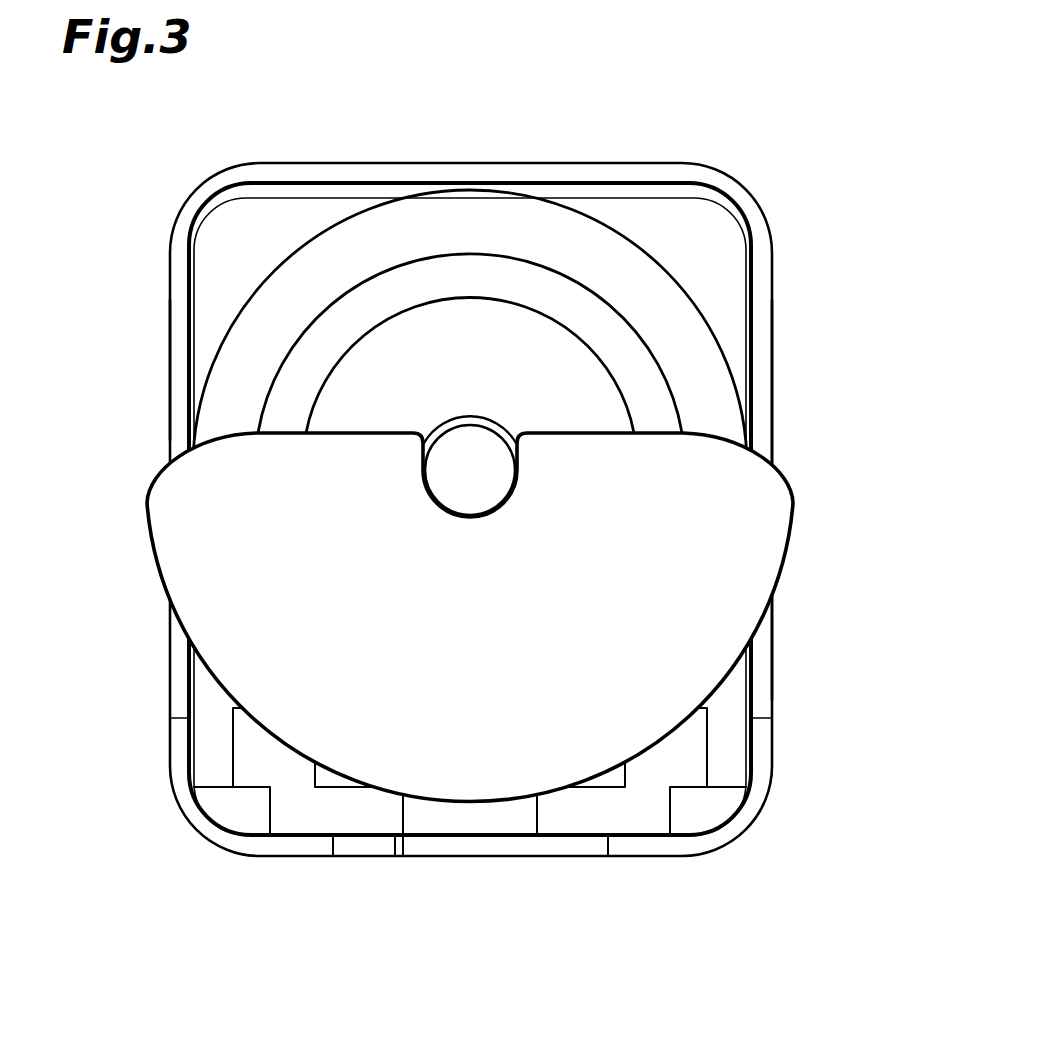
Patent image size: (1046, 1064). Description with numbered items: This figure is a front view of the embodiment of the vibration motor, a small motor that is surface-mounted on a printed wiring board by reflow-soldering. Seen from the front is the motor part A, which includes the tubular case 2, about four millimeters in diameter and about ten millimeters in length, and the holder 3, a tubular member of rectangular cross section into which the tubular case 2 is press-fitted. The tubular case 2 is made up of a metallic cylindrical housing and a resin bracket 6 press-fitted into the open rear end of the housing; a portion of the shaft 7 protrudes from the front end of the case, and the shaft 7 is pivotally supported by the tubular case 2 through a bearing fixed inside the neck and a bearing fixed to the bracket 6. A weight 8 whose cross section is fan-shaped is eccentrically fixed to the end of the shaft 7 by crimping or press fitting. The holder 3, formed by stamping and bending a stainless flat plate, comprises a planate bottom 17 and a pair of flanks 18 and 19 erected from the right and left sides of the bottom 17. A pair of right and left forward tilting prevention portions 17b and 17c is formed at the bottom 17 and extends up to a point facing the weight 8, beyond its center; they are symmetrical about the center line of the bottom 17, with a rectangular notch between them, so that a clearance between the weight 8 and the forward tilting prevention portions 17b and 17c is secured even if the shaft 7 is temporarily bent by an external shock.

The tubular case 2 is at (703, 322).
The holder 3 is at (646, 162).
The resin bracket 6 is at (737, 220).
The shaft 7 is at (492, 485).
The weight 8 is at (757, 569).
The bottom 17 is at (302, 858).
The forward tilting prevention portion 17b is at (220, 857).
The forward tilting prevention portion 17c is at (707, 855).
The flank 18 is at (772, 367).
The flank 19 is at (170, 320).
The motor part A is at (150, 626).